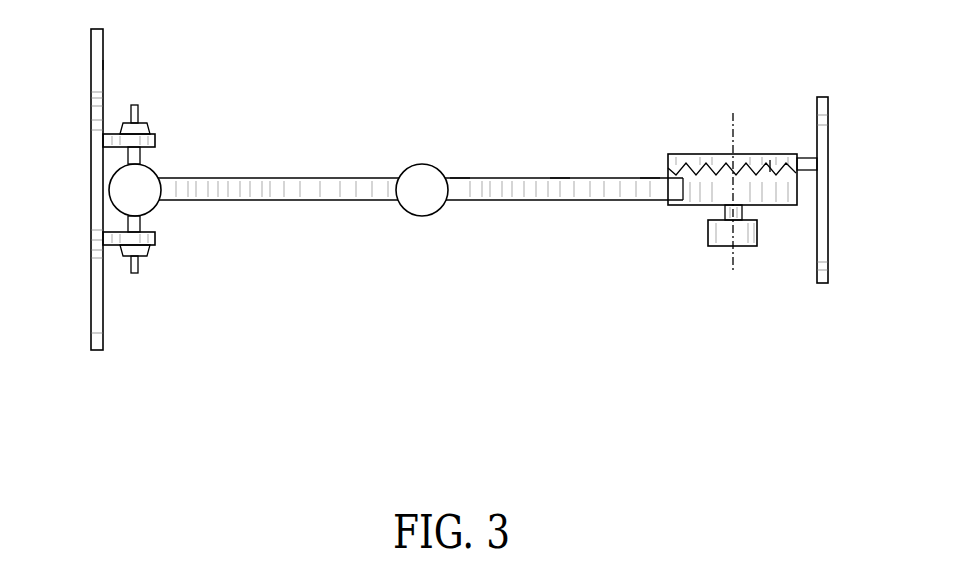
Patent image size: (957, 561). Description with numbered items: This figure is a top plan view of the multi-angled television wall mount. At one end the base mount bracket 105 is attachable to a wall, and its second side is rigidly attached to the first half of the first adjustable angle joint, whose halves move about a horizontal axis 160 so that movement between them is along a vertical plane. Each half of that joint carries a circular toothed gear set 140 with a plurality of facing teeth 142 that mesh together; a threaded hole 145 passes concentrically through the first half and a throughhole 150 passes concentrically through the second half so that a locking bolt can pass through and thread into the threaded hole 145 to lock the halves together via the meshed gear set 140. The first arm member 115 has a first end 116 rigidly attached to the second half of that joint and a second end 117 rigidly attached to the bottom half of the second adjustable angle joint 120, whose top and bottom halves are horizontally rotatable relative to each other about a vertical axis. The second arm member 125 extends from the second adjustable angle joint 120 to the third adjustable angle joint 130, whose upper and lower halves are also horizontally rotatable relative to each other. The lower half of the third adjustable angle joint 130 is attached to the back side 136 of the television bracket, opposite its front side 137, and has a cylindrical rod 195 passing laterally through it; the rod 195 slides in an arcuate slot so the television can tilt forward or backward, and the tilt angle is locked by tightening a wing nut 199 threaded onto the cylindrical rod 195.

The base mount bracket 105 is at (827, 97).
The first arm member 115 is at (557, 178).
The first end 116 is at (648, 179).
The second end 117 is at (460, 178).
The second adjustable angle joint 120 is at (420, 192).
The second arm member 125 is at (306, 178).
The third adjustable angle joint 130 is at (140, 188).
The back side 136 is at (103, 64).
The front side 137 is at (91, 85).
The circular toothed gear set 140 is at (700, 153).
The facing teeth 142 is at (772, 167).
The threaded hole 145 is at (726, 148).
The throughhole 150 is at (721, 212).
The horizontal axis 160 is at (733, 114).
The cylindrical rod 195 is at (142, 153).
The wing nut 199 is at (138, 108).